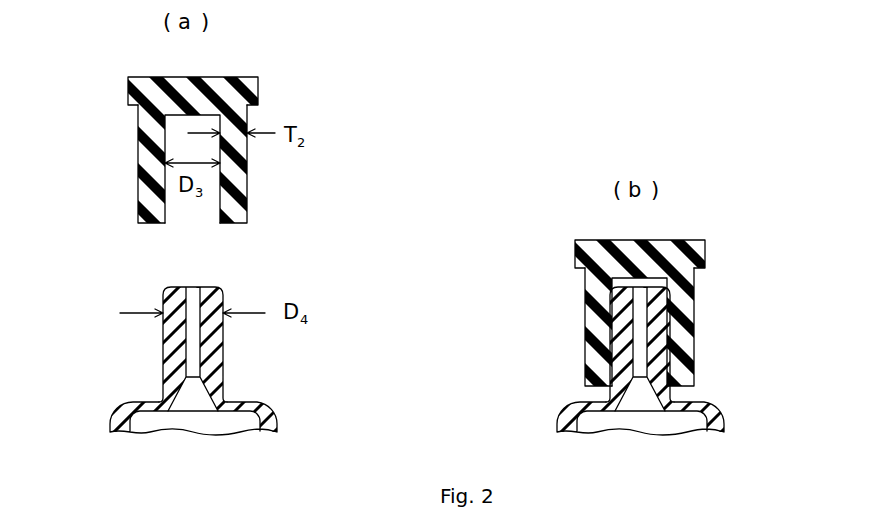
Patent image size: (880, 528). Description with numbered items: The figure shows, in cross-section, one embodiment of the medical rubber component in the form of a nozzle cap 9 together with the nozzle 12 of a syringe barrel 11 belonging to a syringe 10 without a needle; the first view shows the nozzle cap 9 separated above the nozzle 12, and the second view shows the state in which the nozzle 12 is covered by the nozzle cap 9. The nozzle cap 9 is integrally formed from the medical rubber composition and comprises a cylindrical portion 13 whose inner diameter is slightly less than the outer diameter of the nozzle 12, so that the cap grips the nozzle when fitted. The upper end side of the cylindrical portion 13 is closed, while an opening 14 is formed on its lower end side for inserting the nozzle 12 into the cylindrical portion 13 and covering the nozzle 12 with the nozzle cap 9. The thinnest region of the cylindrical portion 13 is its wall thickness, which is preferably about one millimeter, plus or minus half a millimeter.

The nozzle cap 9 is at (438, 230).
The syringe 10 is at (439, 360).
The syringe barrel 11 is at (261, 404).
The nozzle 12 is at (213, 365).
The cylindrical portion 13 is at (152, 192).
The opening 14 is at (198, 217).